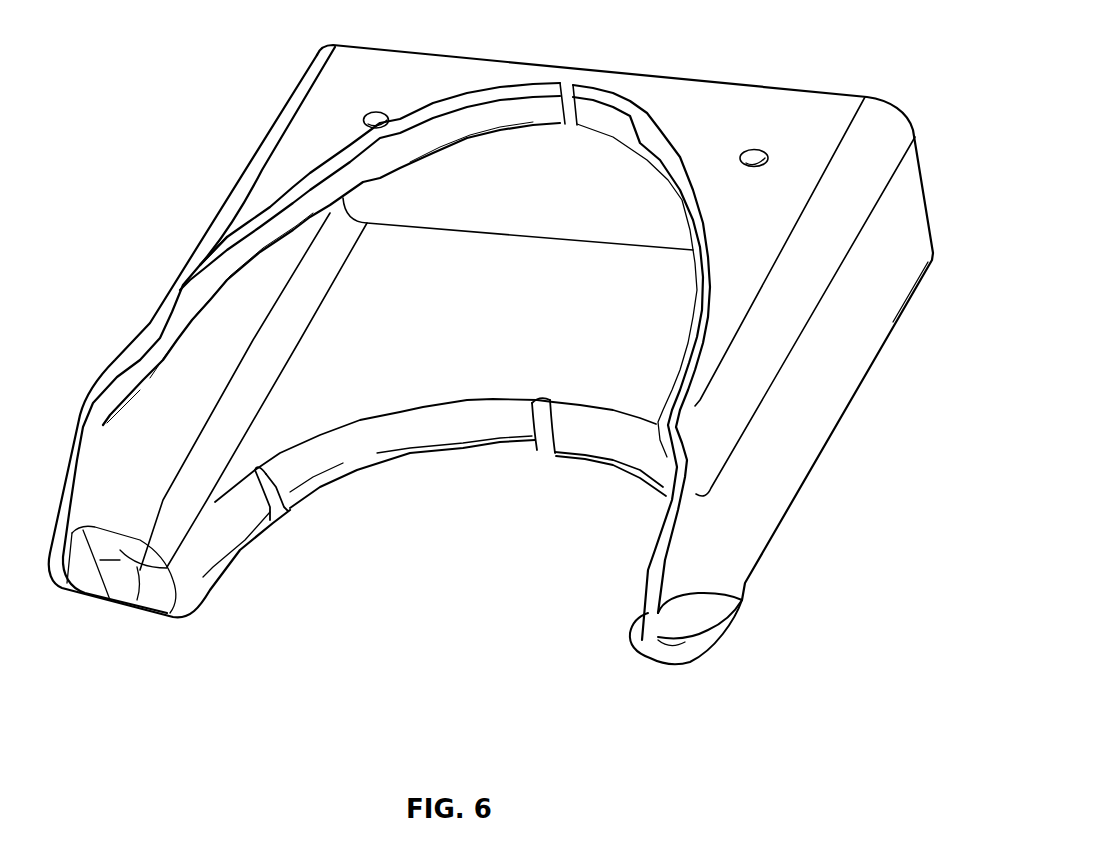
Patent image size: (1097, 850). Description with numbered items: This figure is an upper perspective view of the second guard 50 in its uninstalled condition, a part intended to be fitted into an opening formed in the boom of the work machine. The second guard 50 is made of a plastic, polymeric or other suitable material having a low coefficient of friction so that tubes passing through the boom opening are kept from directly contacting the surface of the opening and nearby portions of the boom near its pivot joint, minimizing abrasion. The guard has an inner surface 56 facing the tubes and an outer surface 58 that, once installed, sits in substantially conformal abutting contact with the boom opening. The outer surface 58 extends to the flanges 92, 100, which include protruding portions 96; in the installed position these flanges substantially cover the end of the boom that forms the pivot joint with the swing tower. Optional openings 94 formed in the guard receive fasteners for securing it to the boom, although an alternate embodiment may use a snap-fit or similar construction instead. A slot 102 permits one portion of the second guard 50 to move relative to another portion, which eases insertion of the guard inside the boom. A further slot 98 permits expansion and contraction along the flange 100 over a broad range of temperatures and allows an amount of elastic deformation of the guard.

The second guard 50 is at (823, 460).
The inner surface 56 is at (343, 363).
The outer surface 58 is at (847, 322).
The flange 92 is at (535, 83).
The openings 94 is at (757, 147).
The protruding portions 96 is at (723, 623).
The slot 98 is at (543, 447).
The flange 100 is at (455, 455).
The slot 102 is at (597, 76).